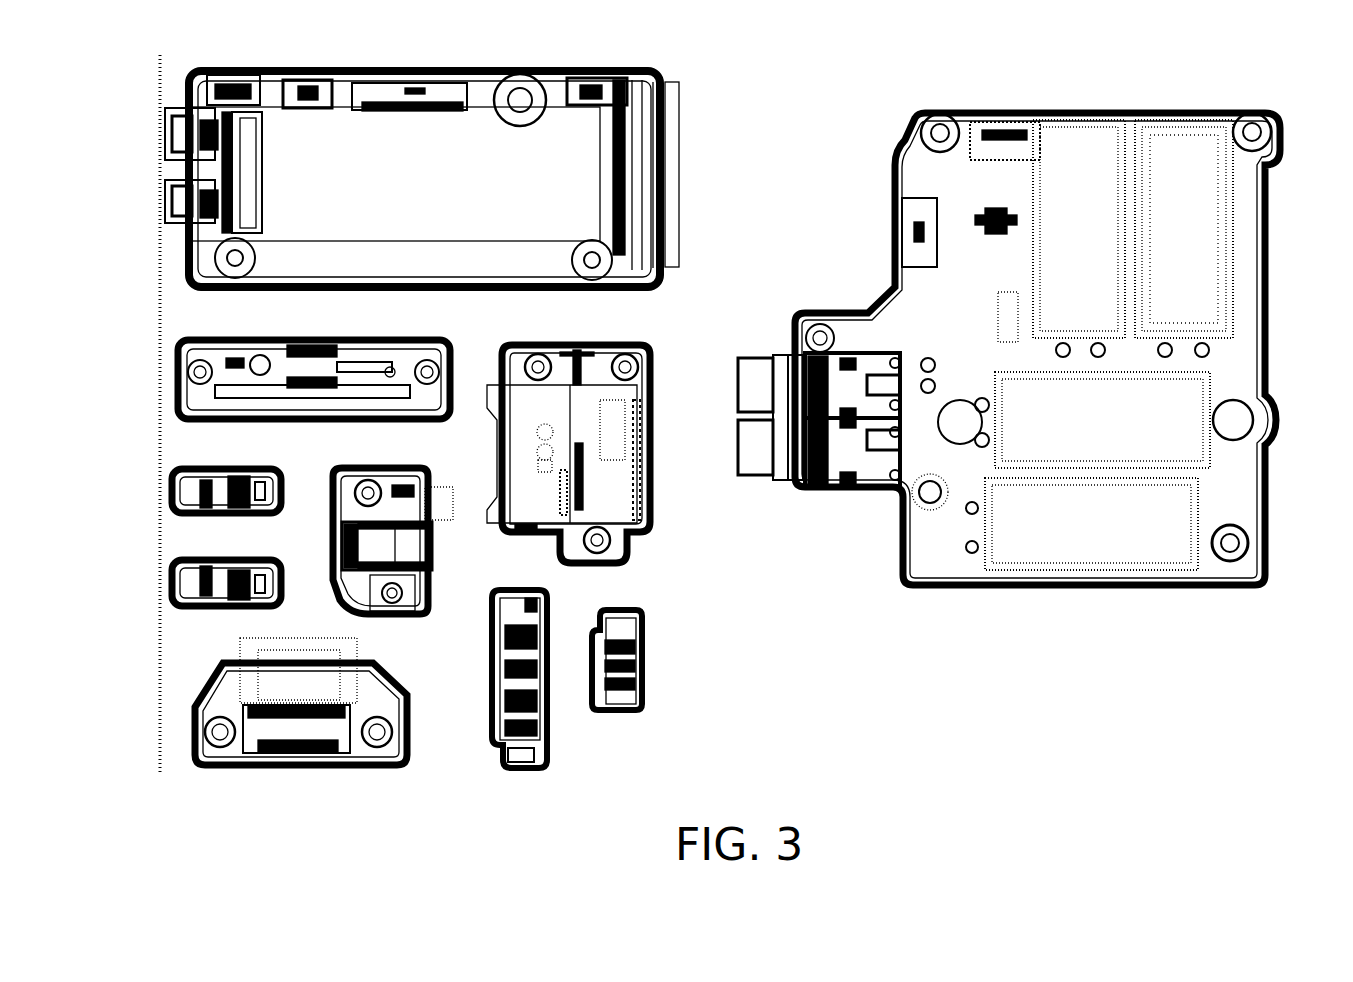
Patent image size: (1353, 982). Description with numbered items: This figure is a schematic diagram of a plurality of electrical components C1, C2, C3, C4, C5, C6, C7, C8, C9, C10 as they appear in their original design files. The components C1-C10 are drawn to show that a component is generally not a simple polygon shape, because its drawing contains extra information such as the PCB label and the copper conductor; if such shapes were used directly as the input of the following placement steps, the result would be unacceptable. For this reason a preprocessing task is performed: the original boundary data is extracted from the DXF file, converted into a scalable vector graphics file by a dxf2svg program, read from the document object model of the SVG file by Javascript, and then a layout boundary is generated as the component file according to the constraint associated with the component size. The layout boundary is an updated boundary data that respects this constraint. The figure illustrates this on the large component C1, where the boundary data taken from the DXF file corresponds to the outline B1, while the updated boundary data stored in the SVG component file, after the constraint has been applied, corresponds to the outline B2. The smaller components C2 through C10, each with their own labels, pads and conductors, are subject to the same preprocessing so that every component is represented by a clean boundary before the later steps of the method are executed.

The electrical component C1 is at (1178, 145).
The electrical component C2 is at (392, 97).
The electrical component C3 is at (313, 380).
The electrical component C4 is at (185, 492).
The electrical component C5 is at (185, 578).
The electrical component C6 is at (220, 705).
The electrical component C7 is at (350, 542).
The electrical component C8 is at (625, 455).
The electrical component C9 is at (515, 658).
The electrical component C10 is at (625, 660).
The outline B1 is at (1243, 214).
The outline B2 is at (1262, 232).